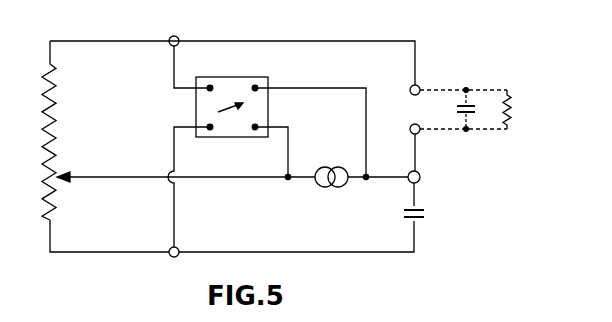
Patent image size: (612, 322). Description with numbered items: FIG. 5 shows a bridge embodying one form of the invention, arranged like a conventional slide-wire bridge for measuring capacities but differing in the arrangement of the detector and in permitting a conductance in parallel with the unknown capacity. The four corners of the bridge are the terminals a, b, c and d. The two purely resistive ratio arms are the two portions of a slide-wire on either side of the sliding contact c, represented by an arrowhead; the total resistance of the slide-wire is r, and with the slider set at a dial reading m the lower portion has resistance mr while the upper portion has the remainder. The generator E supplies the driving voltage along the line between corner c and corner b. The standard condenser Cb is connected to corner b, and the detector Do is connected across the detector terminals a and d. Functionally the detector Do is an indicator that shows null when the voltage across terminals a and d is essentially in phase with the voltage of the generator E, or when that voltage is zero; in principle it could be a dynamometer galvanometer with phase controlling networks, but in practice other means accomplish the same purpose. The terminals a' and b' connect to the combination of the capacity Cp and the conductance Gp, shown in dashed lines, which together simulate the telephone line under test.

The bridge corner a is at (176, 32).
The bridge corner b is at (420, 178).
The sliding contact c is at (63, 169).
The bridge corner d is at (173, 260).
The terminal a' is at (420, 82).
The terminal b' is at (420, 135).
The detector Do is at (232, 97).
The generator E is at (331, 188).
The capacity Cp is at (457, 109).
The conductance Gp is at (517, 109).
The standard condenser Cb is at (423, 217).
The total resistance of the slide-wire r is at (39, 142).
The ratio arm resistance mr is at (74, 199).